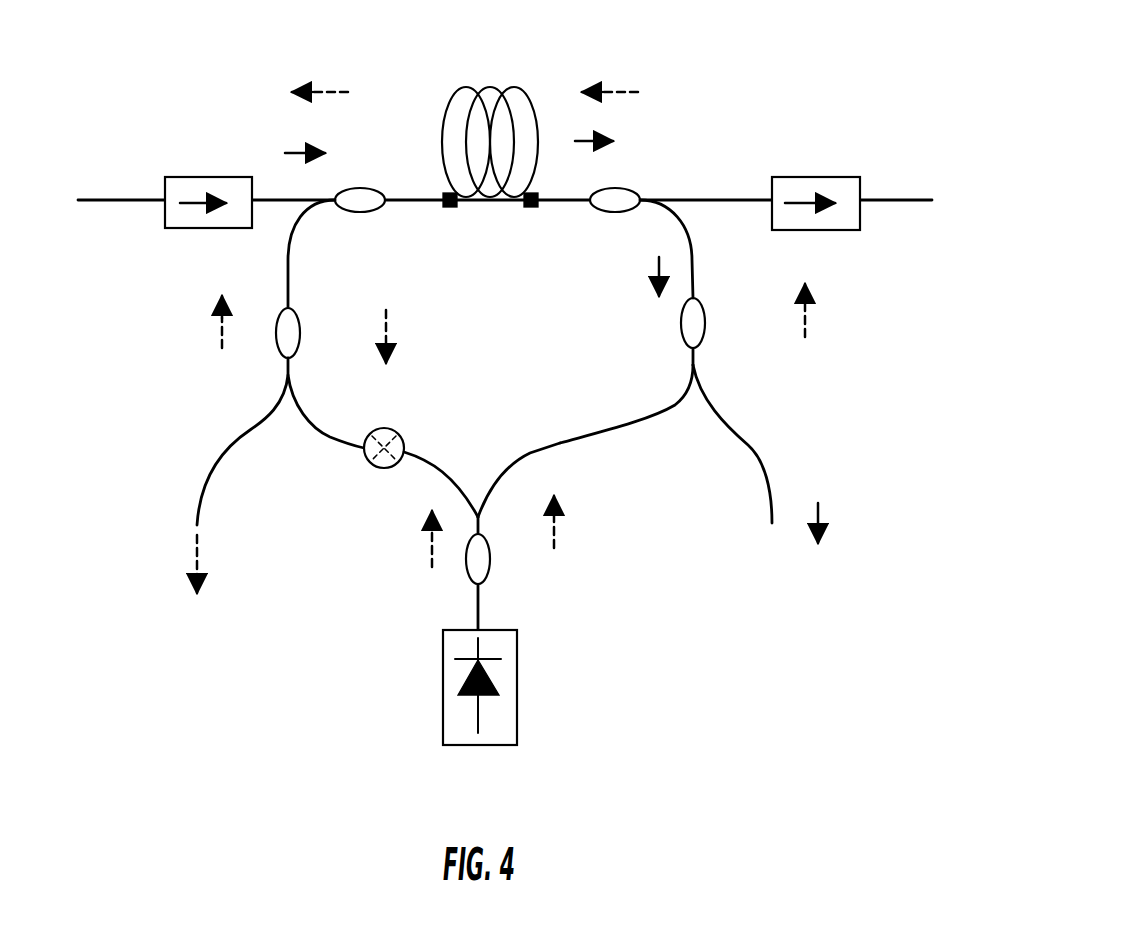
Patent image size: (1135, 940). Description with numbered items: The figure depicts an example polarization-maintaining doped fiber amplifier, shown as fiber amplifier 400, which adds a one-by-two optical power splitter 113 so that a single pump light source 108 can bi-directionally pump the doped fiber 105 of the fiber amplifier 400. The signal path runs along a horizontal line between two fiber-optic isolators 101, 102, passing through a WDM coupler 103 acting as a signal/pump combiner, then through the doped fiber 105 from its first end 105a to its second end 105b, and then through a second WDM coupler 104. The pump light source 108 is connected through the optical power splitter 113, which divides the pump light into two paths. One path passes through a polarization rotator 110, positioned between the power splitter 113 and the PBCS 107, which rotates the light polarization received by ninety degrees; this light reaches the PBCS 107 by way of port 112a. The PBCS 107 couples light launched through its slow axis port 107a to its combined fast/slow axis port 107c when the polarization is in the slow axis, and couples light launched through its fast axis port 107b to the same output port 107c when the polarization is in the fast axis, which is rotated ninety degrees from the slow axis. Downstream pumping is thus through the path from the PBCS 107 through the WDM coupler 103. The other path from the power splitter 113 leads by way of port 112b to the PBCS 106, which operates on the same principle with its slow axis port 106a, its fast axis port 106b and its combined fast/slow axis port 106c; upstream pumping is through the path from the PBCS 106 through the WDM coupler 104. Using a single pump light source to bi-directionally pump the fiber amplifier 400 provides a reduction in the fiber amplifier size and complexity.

The fiber amplifier 400 is at (794, 82).
The fiber-optic isolator 101 is at (200, 228).
The fiber-optic isolator 102 is at (803, 230).
The WDM coupler 103 is at (360, 212).
The WDM coupler 104 is at (615, 212).
The doped fiber 105 is at (492, 204).
The first end of the doped fiber 105a is at (445, 193).
The second end of the doped fiber 105b is at (536, 193).
The polarization beam combiner/splitter 106 is at (705, 320).
The slow axis port of the PBCS 106 106a is at (600, 438).
The fast axis port of the PBCS 106 106b is at (752, 447).
The combined fast/slow axis port of PBCS 106 106c is at (692, 268).
The polarization beam combiner/splitter 107 is at (275, 330).
The slow axis port of the PBCS 107 107a is at (248, 432).
The fast axis port of the PBCS 107 107b is at (328, 425).
The combined fast/slow axis port of the PBCS 107 107c is at (288, 274).
The pump light source 108 is at (487, 745).
The polarization rotator 110 is at (420, 422).
The port of PBCS 112 112a is at (460, 478).
The port of PBCS 112 112b is at (508, 468).
The optical power splitter 113 is at (492, 568).